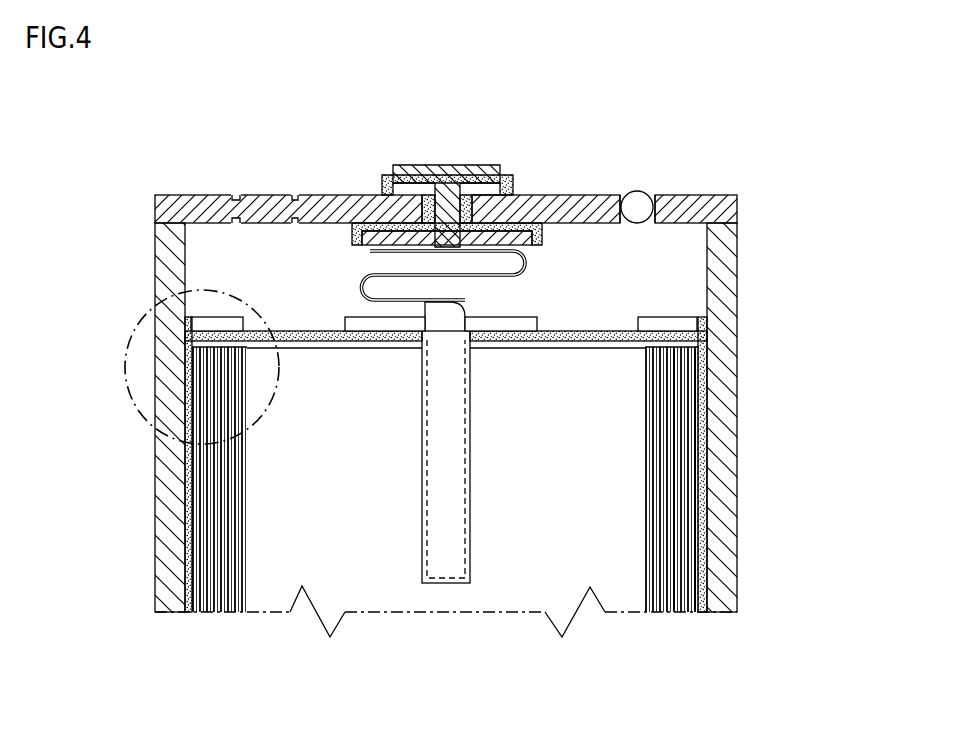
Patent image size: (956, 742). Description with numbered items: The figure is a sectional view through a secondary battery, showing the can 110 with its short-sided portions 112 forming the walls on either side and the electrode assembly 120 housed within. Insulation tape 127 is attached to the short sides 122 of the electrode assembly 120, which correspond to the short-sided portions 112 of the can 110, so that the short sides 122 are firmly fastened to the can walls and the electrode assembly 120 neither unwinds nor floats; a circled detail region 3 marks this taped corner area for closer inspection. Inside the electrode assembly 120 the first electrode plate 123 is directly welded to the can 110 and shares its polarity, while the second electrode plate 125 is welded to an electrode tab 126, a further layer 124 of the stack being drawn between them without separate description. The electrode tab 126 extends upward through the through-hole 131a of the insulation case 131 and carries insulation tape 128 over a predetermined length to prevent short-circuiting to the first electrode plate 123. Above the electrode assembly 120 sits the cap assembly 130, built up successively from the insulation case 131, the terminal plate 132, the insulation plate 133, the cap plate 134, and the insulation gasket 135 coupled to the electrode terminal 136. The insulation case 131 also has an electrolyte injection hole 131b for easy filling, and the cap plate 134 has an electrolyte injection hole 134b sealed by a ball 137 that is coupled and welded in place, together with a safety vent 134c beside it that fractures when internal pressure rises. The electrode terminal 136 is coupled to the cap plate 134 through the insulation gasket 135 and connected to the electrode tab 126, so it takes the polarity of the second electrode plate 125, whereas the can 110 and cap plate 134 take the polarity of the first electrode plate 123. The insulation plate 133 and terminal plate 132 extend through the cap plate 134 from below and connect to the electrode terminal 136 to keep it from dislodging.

The enlarged detail region 3 is at (125, 330).
The can 110 is at (748, 394).
The short-sided portions 112 is at (722, 432).
The electrode assembly 120 is at (494, 624).
The short sides 122 is at (712, 548).
The first electrode plate 123 is at (700, 611).
The separator 124 is at (676, 613).
The second electrode plate 125 is at (613, 613).
The electrode tab 126 is at (465, 301).
The insulation tape 127 is at (706, 477).
The insulation tape 128 is at (422, 583).
The cap assembly 130 is at (752, 199).
The insulation case 131 is at (706, 326).
The through-hole 131a is at (470, 346).
The electrolyte injection hole 131b is at (627, 337).
The terminal plate 132 is at (530, 197).
The insulation plate 133 is at (562, 197).
The cap plate 134 is at (723, 196).
The electrolyte injection hole 134b is at (655, 197).
The safety vent 134c is at (237, 196).
The insulation gasket 135 is at (507, 196).
The electrode terminal 136 is at (418, 168).
The ball 137 is at (634, 191).